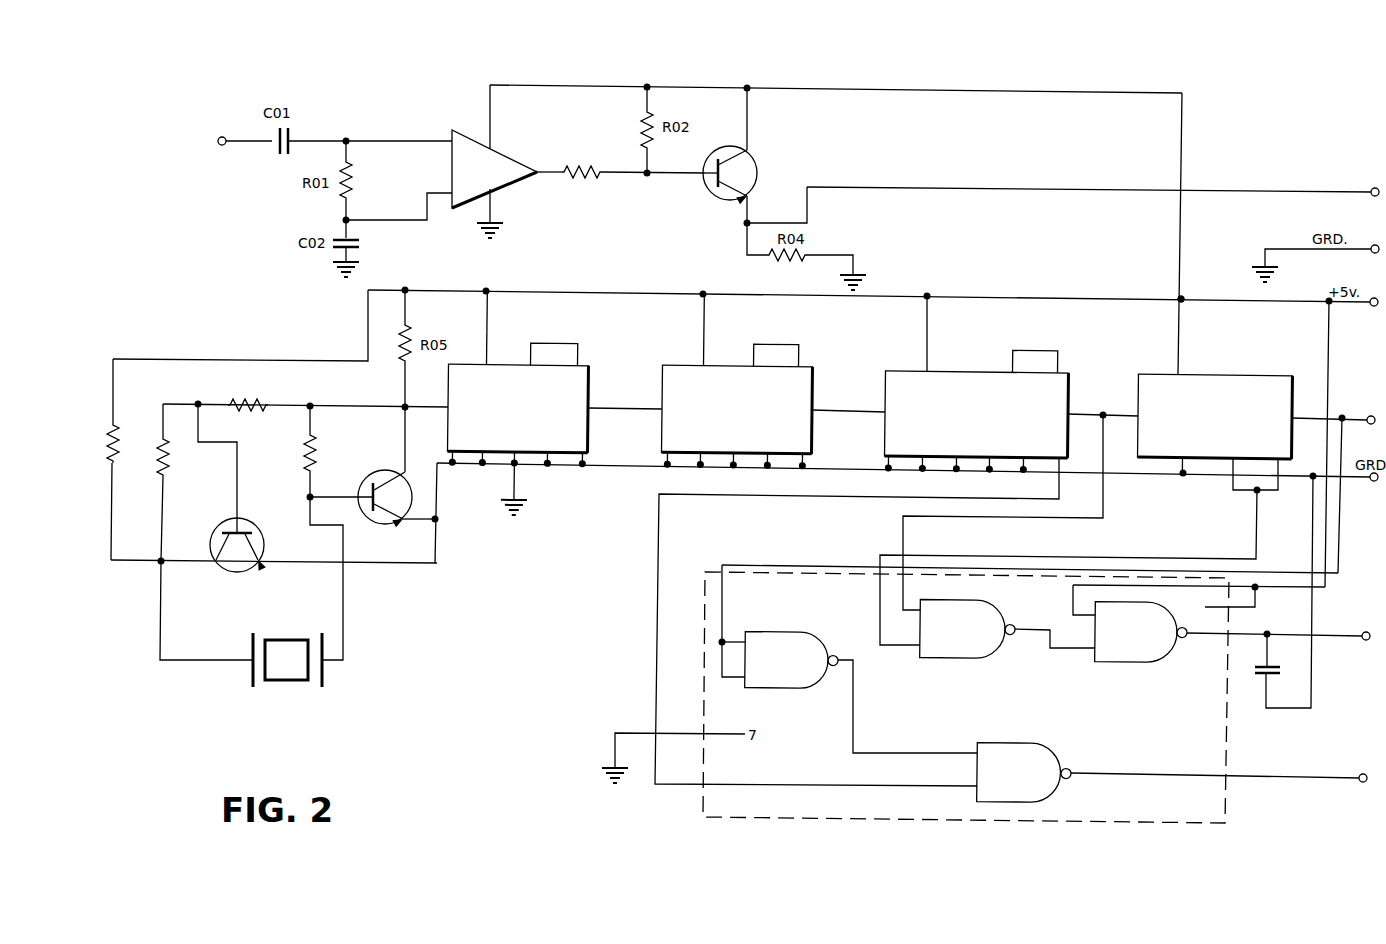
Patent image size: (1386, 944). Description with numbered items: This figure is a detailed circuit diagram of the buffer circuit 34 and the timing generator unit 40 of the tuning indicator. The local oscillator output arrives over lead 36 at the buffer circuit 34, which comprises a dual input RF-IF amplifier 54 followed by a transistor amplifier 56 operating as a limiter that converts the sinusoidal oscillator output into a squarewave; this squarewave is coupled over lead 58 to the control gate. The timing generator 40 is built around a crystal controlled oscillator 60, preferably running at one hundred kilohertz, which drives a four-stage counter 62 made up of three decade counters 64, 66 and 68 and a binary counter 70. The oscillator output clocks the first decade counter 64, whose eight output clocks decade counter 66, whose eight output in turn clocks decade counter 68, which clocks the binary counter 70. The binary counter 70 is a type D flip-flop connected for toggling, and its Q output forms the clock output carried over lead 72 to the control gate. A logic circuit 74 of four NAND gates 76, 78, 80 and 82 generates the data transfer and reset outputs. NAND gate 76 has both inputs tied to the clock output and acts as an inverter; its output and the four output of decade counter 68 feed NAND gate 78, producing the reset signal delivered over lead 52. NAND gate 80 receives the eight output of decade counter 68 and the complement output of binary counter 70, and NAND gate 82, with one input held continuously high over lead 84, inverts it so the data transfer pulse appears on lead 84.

The buffer circuit 34 is at (627, 202).
The lead 36 is at (249, 138).
The timing generator unit 40 is at (596, 637).
The lead 52 is at (1318, 781).
The dual input RF-IF amplifier 54 is at (511, 191).
The transistor amplifier 56 is at (701, 186).
The lead 58 is at (1054, 196).
The crystal controlled oscillator 60 is at (359, 579).
The four-stage counter 62 is at (908, 352).
The decade counter 64 is at (505, 364).
The decade counter 66 is at (668, 365).
The decade counter 68 is at (893, 372).
The binary counter 70 is at (1143, 375).
The lead 72 is at (1356, 424).
The logic circuit 74 is at (1020, 832).
The NAND gate 76 is at (790, 632).
The NAND gate 78 is at (1044, 743).
The NAND gate 80 is at (987, 601).
The NAND gate 82 is at (1144, 662).
The lead 84 is at (1073, 602).